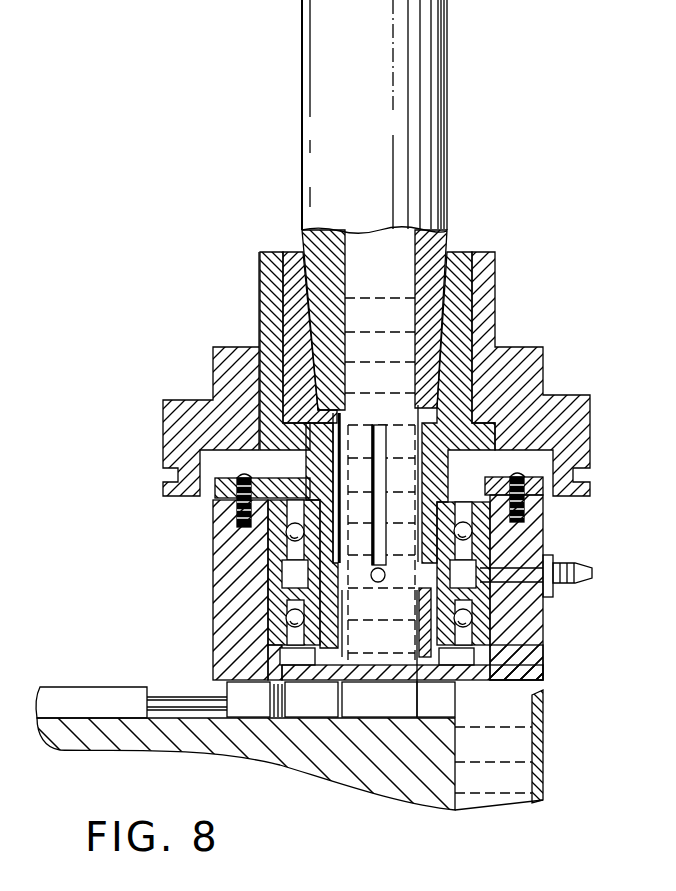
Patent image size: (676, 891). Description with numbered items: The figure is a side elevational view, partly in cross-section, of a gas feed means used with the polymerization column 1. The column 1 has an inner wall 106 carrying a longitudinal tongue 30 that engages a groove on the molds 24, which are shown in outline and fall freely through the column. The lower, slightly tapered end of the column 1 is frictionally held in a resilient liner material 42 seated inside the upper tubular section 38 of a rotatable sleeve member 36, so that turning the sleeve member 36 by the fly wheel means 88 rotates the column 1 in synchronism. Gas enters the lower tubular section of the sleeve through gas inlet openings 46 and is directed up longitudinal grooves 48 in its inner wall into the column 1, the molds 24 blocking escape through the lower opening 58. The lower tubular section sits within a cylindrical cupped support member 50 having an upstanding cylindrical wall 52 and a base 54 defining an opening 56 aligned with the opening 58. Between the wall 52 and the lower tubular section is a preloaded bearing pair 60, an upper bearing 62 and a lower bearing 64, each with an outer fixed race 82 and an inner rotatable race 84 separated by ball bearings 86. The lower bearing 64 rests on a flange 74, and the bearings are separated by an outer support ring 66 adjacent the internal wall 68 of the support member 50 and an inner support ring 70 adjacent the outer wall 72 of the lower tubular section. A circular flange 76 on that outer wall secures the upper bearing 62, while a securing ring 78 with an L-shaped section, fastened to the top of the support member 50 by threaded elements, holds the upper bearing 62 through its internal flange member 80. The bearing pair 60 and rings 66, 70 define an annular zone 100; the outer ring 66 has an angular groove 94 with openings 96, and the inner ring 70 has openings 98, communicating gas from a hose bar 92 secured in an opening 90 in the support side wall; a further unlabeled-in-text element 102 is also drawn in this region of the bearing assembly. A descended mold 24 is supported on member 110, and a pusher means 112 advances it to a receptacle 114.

The polymerization column 1 is at (447, 58).
The tongue 30 is at (357, 240).
The resilient liner material 42 is at (460, 253).
The inner wall 106 is at (415, 298).
The rotatable sleeve member 36 is at (502, 303).
The upper tubular section 38 is at (265, 328).
The fly wheel means 88 is at (560, 402).
The longitudinal grooves 48 is at (383, 471).
The gas inlet openings 46 is at (386, 576).
The internal flange member 80 is at (283, 497).
The ball bearings 86 is at (460, 500).
The securing ring 78 is at (533, 485).
The cylindrical cupped support member 50 is at (211, 524).
The outer support ring 66 is at (508, 560).
The inner rotatable race 84 is at (337, 500).
The outer wall 72 is at (306, 530).
The circular flange 76 is at (463, 521).
The inner support ring 70 is at (330, 556).
The annular zone 100 is at (398, 567).
The outer fixed race 82 is at (490, 534).
The upper bearing 62 is at (268, 557).
The preloaded bearing pair 60 is at (260, 537).
The angular groove 94 is at (268, 578).
The openings 96 is at (268, 595).
The lower bearing 64 is at (275, 634).
The internal wall 68 is at (474, 620).
The plunger pin 102 is at (310, 584).
The openings 98 is at (427, 592).
The opening 56 is at (403, 672).
The upstanding cylindrical wall 52 is at (545, 664).
The flange 74 is at (490, 671).
The opening 58 is at (381, 683).
The molds 24 is at (418, 697).
The base 54 is at (287, 673).
The opening 90 is at (556, 582).
The hose bar 92 is at (590, 575).
The pusher means 112 is at (72, 695).
The member 110 is at (322, 748).
The receptacle 114 is at (535, 720).